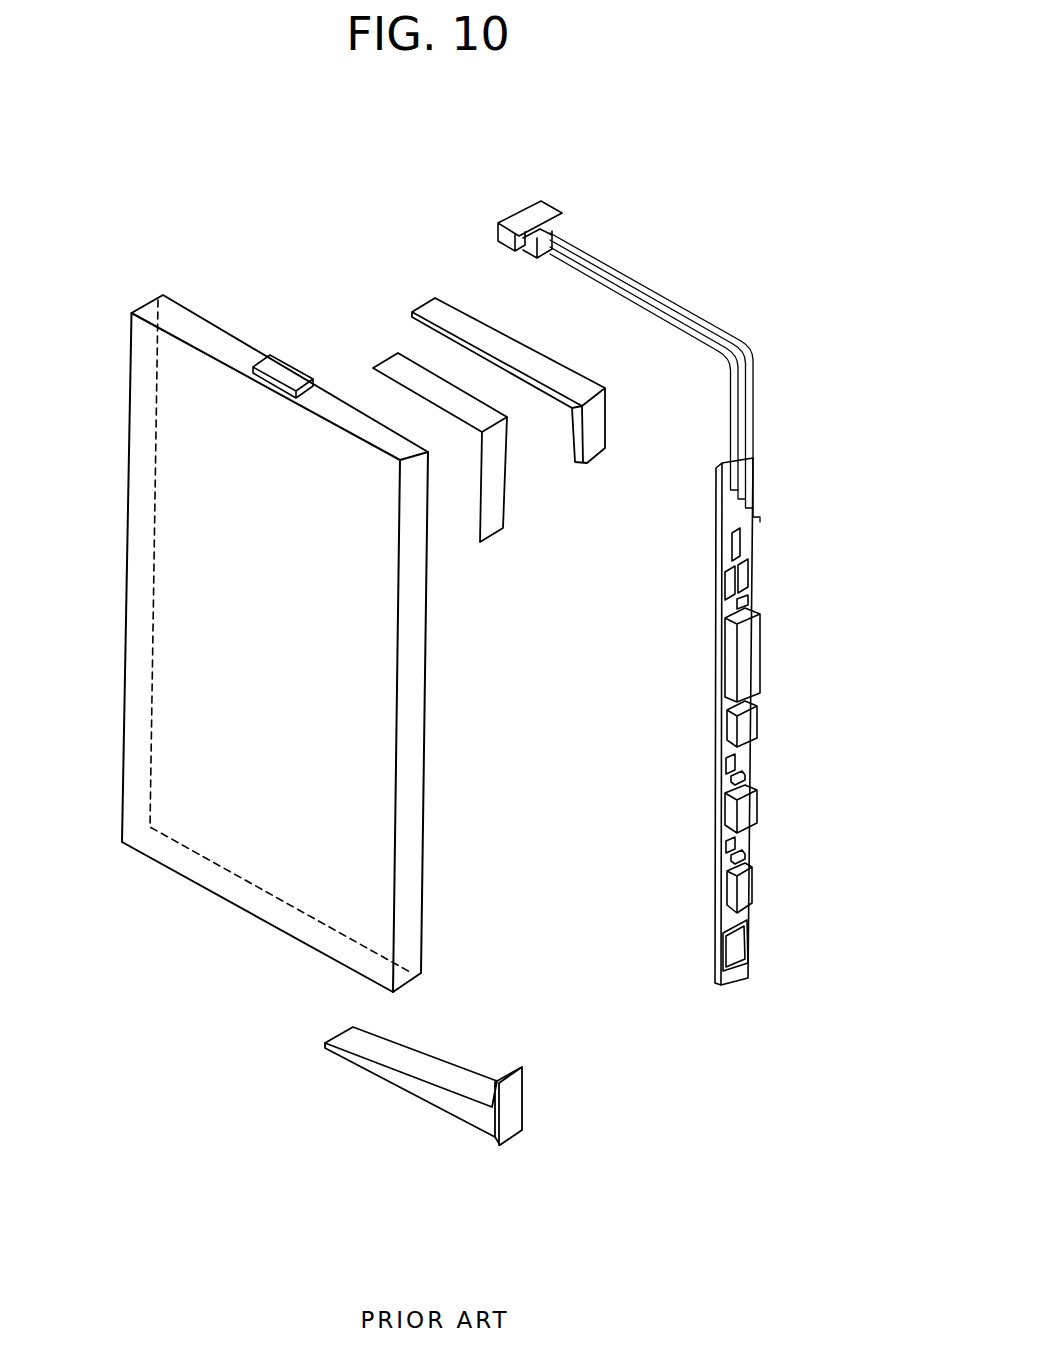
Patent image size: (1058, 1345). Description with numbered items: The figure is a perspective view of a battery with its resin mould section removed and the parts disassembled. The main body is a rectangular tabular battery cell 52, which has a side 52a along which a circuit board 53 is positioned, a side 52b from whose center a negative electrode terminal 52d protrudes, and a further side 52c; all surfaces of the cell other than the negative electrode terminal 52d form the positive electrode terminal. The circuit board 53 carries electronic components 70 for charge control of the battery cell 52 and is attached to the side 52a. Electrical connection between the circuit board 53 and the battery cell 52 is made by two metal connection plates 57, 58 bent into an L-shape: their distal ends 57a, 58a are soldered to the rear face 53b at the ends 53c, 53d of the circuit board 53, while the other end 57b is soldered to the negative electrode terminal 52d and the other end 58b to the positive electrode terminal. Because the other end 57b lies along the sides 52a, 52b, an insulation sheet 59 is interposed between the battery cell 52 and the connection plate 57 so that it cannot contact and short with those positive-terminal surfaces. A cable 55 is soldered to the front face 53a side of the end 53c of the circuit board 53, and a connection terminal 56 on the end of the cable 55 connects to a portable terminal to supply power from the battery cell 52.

The battery cell 52 is at (143, 598).
The side of battery cell 52a is at (413, 700).
The side of battery cell 52b is at (207, 327).
The side of battery cell 52c is at (177, 860).
The negative electrode terminal 52d is at (285, 370).
The circuit board 53 is at (750, 552).
The front face of circuit board 53a is at (750, 532).
The rear face of circuit board 53b is at (717, 918).
The end of circuit board 53c is at (717, 498).
The end of circuit board 53d is at (716, 957).
The cable 55 is at (667, 290).
The connection terminal 56 is at (525, 213).
The connection plate 57 is at (535, 360).
The distal end of connection plate 57a is at (590, 420).
The other end of connection plate 57b is at (438, 305).
The connection plate 58 is at (447, 1097).
The distal end of connection plate 58a is at (513, 1102).
The other end of connection plate 58b is at (345, 1037).
The insulation sheet 59 is at (498, 467).
The electronic components 70 is at (765, 663).